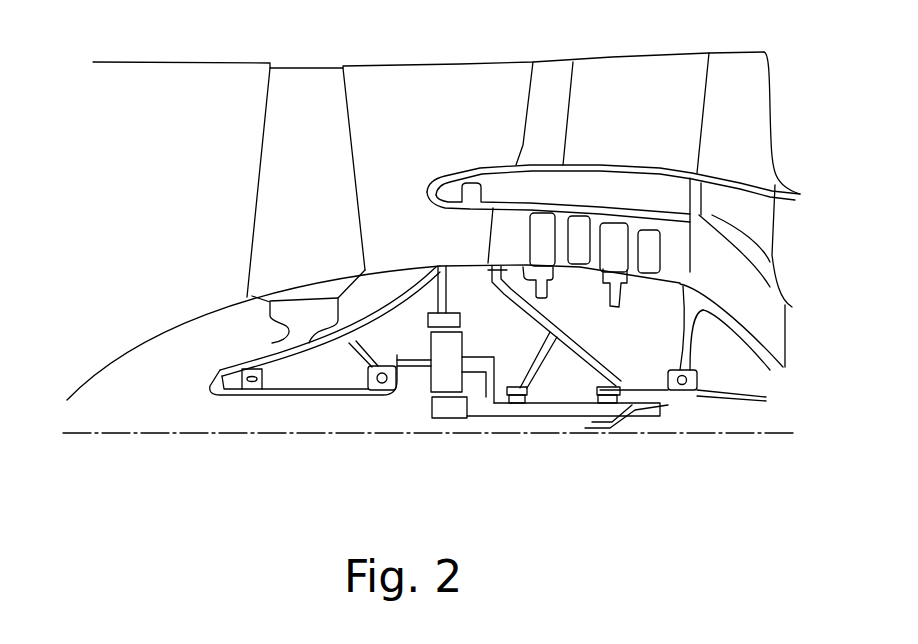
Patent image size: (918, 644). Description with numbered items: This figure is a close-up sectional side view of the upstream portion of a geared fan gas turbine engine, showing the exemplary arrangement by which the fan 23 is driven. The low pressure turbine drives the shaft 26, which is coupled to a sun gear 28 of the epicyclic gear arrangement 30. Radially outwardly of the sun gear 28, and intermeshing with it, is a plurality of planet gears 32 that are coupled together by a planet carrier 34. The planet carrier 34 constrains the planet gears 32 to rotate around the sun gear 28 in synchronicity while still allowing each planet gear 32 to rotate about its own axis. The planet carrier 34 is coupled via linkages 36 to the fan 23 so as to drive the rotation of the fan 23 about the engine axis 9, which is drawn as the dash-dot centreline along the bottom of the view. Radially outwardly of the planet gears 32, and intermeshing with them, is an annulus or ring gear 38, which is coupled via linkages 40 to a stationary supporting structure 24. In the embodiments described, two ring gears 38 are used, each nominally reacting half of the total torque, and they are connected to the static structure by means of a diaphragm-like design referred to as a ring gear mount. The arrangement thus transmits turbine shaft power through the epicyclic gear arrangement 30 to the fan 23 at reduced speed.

The engine axis 9 is at (238, 435).
The fan 23 is at (273, 183).
The stationary supporting structure 24 is at (455, 235).
The shaft 26 is at (584, 413).
The sun gear 28 is at (448, 403).
The epicyclic gear arrangement 30 is at (407, 378).
The planet gears 32 is at (435, 380).
The planet carrier 34 is at (487, 400).
The linkages 36 is at (397, 395).
The ring gear 38 is at (430, 320).
The linkages 40 is at (447, 300).